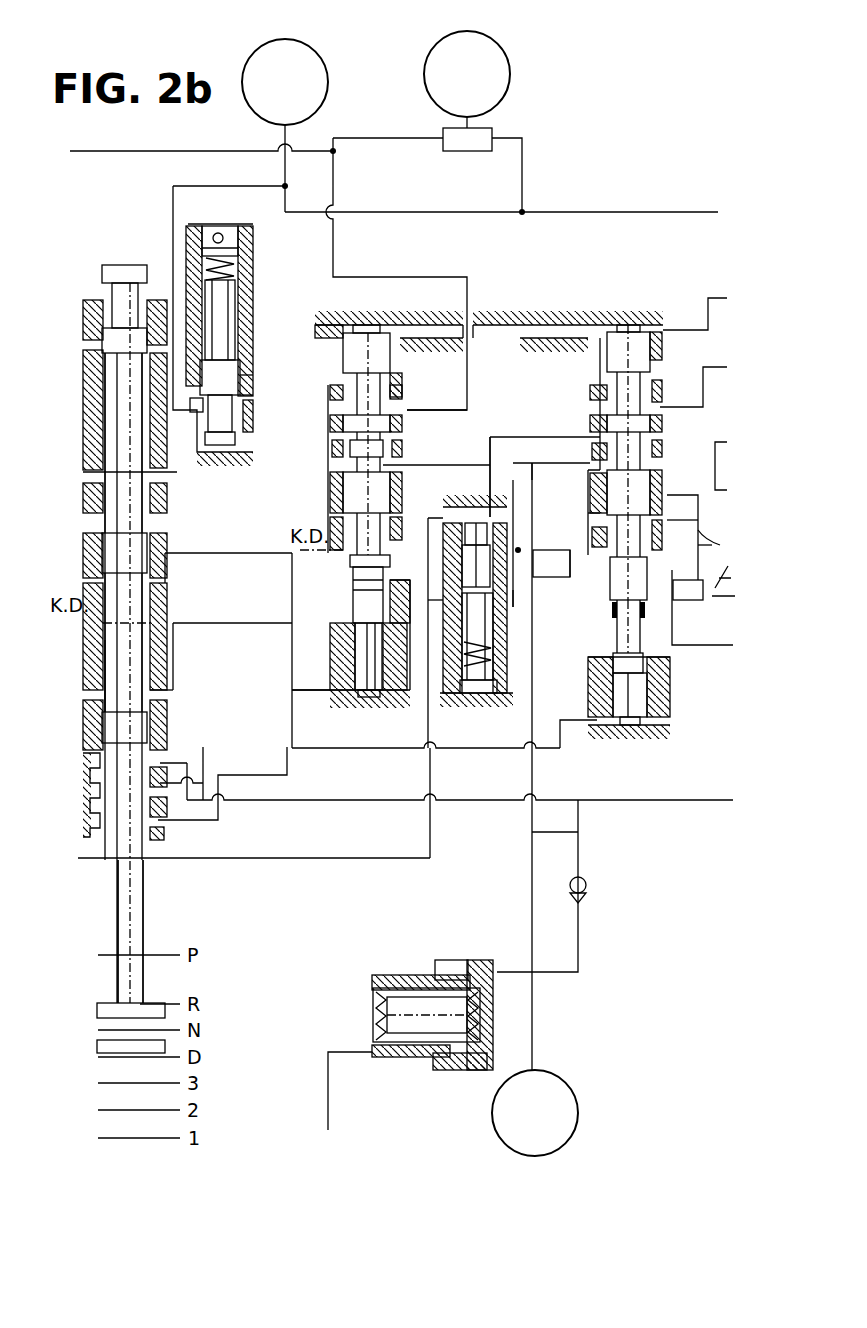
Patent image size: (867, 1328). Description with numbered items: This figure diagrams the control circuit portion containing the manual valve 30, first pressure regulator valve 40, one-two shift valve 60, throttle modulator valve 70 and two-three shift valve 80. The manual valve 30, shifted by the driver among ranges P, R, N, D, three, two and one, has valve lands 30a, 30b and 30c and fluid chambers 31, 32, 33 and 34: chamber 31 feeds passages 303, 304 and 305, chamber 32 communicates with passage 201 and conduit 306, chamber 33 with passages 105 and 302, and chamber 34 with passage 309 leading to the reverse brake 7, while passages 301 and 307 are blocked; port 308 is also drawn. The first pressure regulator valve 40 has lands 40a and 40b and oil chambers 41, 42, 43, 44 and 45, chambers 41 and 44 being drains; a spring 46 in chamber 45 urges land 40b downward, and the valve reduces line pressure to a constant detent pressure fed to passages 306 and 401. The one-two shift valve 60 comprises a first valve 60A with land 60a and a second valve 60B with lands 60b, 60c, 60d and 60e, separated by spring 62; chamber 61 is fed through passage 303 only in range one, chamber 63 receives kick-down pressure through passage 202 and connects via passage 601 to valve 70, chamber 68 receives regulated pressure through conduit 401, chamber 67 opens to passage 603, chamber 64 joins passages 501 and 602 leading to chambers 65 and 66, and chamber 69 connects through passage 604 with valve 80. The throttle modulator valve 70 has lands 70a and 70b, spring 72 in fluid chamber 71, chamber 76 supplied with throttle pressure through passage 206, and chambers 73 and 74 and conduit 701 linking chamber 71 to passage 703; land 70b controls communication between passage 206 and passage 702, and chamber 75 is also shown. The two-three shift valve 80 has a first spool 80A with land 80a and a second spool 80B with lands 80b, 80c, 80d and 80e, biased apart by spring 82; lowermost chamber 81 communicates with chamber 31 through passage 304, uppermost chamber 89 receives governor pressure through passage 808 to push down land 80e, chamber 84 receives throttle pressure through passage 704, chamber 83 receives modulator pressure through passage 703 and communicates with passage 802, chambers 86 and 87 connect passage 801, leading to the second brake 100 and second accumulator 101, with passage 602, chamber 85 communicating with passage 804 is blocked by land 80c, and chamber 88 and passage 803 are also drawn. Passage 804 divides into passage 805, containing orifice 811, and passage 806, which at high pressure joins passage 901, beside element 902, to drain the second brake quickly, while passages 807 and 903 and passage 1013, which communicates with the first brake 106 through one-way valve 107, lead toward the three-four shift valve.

The reverse brake 7 is at (327, 90).
The first brake 106 is at (505, 72).
The one-way valve 107 is at (492, 136).
The passage 1013 is at (653, 212).
The manual valve 30 is at (106, 634).
The fluid chamber 34 is at (108, 298).
The valve land 30c is at (102, 350).
The fluid chamber 33 is at (105, 396).
The passage 301 is at (102, 553).
The valve land 30b is at (105, 575).
The valve land 30a is at (98, 668).
The passage 201 is at (102, 726).
The fluid chamber 31 is at (143, 862).
The passage 309 is at (162, 352).
The passage 302 is at (92, 452).
The port 308 is at (170, 478).
The passage 105 is at (90, 520).
The passage 307 is at (192, 553).
The fluid chamber 32 is at (150, 600).
The passage 202 is at (93, 641).
The conduit 306 is at (167, 674).
The passage 305 is at (182, 763).
The passage 304 is at (186, 805).
The passage 303 is at (222, 812).
The passage 206 is at (90, 860).
The first pressure regulator valve 40 is at (245, 342).
The oil chamber 45 is at (232, 275).
The spring 46 is at (236, 312).
The valve land 40b is at (236, 360).
The oil chamber 44 is at (265, 360).
The fluid chamber 43 is at (248, 380).
The fluid chamber 42 is at (238, 406).
The oil chamber 41 is at (240, 436).
The valve land 40a is at (228, 460).
The 1-2 shift valve 60 is at (471, 487).
The fluid chamber 69 is at (378, 325).
The valve land 60e is at (395, 356).
The chamber 68 is at (402, 389).
The valve land 60d is at (392, 426).
The second valve 60B is at (395, 451).
The fluid chamber 64 is at (392, 486).
The valve land 60c is at (392, 509).
The chamber 63 is at (390, 541).
The conduit 401 is at (330, 393).
The chamber 67 is at (330, 423).
The chamber 66 is at (330, 449).
The chamber 65 is at (330, 471).
The passage 501 is at (306, 494).
The valve land 60b is at (350, 563).
The spring 62 is at (355, 600).
The first valve 60A is at (355, 653).
The valve land 60a is at (358, 681).
The chamber 61 is at (385, 700).
The throttle modulator valve 70 is at (491, 582).
The chamber 74 is at (473, 555).
The spring 72 is at (485, 640).
The fluid chamber 71 is at (490, 661).
The valve land 70a is at (497, 684).
The valve land 70b is at (512, 600).
The conduit 701 is at (513, 618).
The chamber 73 is at (515, 641).
The passage 601 is at (445, 600).
The passage 602 is at (443, 465).
The passage 702 is at (490, 512).
The chamber 76 is at (483, 513).
The passage 703 is at (545, 568).
The passage 704 is at (532, 470).
The port 75 is at (548, 576).
The 2-3 shift valve 80 is at (630, 522).
The valve land 80e is at (605, 359).
The fluid chamber 89 is at (630, 325).
The port 88 is at (660, 396).
The chamber 87 is at (655, 431).
The second valve spool 80B is at (660, 456).
The fluid chamber 85 is at (660, 491).
The valve land 80d is at (590, 423).
The chamber 86 is at (592, 453).
The passage 801 is at (534, 506).
The valve land 80c is at (590, 501).
The fluid chamber 84 is at (592, 536).
The fluid chamber 83 is at (628, 578).
The valve land 80b is at (612, 609).
The spring 82 is at (612, 639).
The first valve spool 80A is at (647, 661).
The valve land 80a is at (647, 706).
The fluid chamber 81 is at (645, 725).
The passage 808 is at (708, 335).
The passage 807 is at (712, 392).
The passage 903 is at (722, 470).
The passage 804 is at (698, 497).
The passage 803 is at (690, 525).
The orifice 811 is at (712, 542).
The passage 806 is at (706, 547).
The passage 901 is at (692, 595).
The valve 902 is at (729, 588).
The passage 805 is at (680, 618).
The passage 802 is at (690, 635).
The passage 604 is at (483, 322).
The passage 603 is at (470, 412).
The second accumulator 101 is at (462, 915).
The second brake 100 is at (565, 1092).